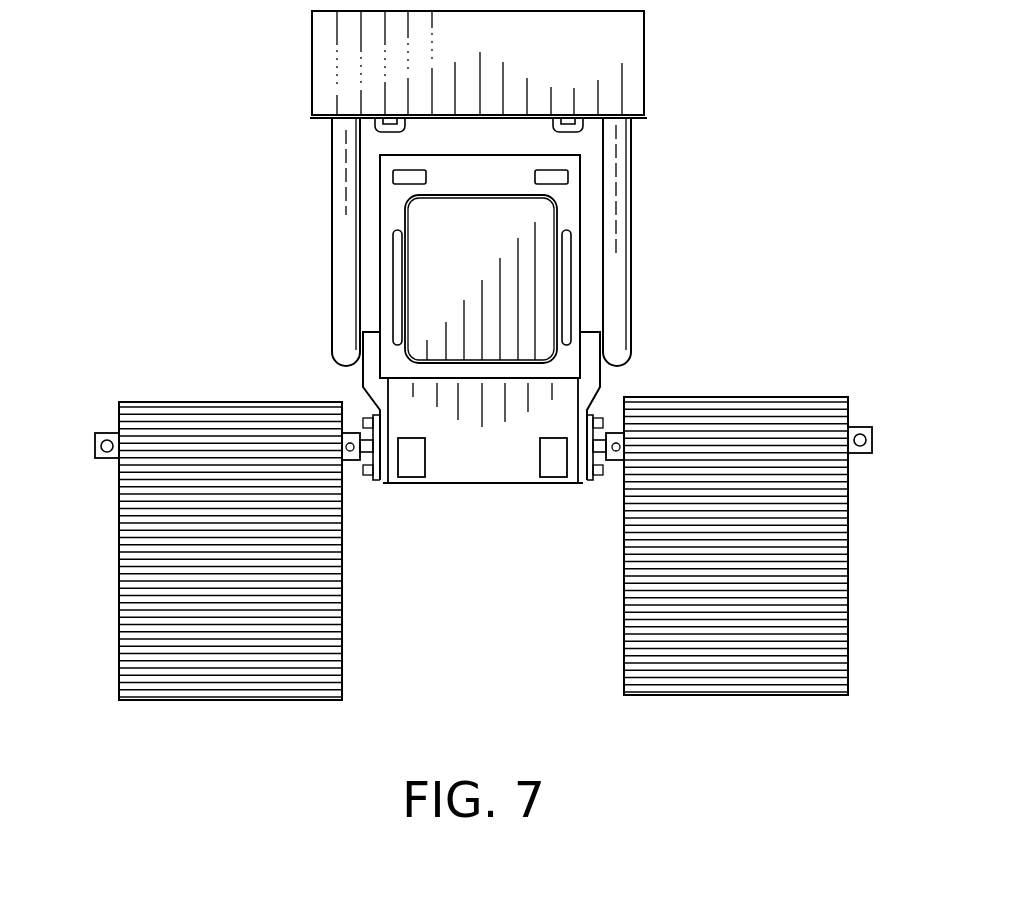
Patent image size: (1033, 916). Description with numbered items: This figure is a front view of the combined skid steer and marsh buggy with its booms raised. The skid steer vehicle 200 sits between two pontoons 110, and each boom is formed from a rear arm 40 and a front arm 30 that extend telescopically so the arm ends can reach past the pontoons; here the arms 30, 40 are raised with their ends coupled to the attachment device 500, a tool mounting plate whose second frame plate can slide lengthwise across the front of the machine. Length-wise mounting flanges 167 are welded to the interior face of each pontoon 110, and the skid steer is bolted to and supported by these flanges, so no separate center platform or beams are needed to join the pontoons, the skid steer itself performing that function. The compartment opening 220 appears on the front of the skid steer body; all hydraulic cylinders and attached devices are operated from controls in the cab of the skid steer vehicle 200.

The tool mounting plate 500 is at (645, 70).
The skid steer vehicle 200 is at (511, 300).
The front arm 30 is at (544, 242).
The rear arm 40 is at (631, 236).
The operator compartment opening 220 is at (430, 242).
The mounting flanges 167 is at (356, 480).
The pontoon 110 is at (118, 558).